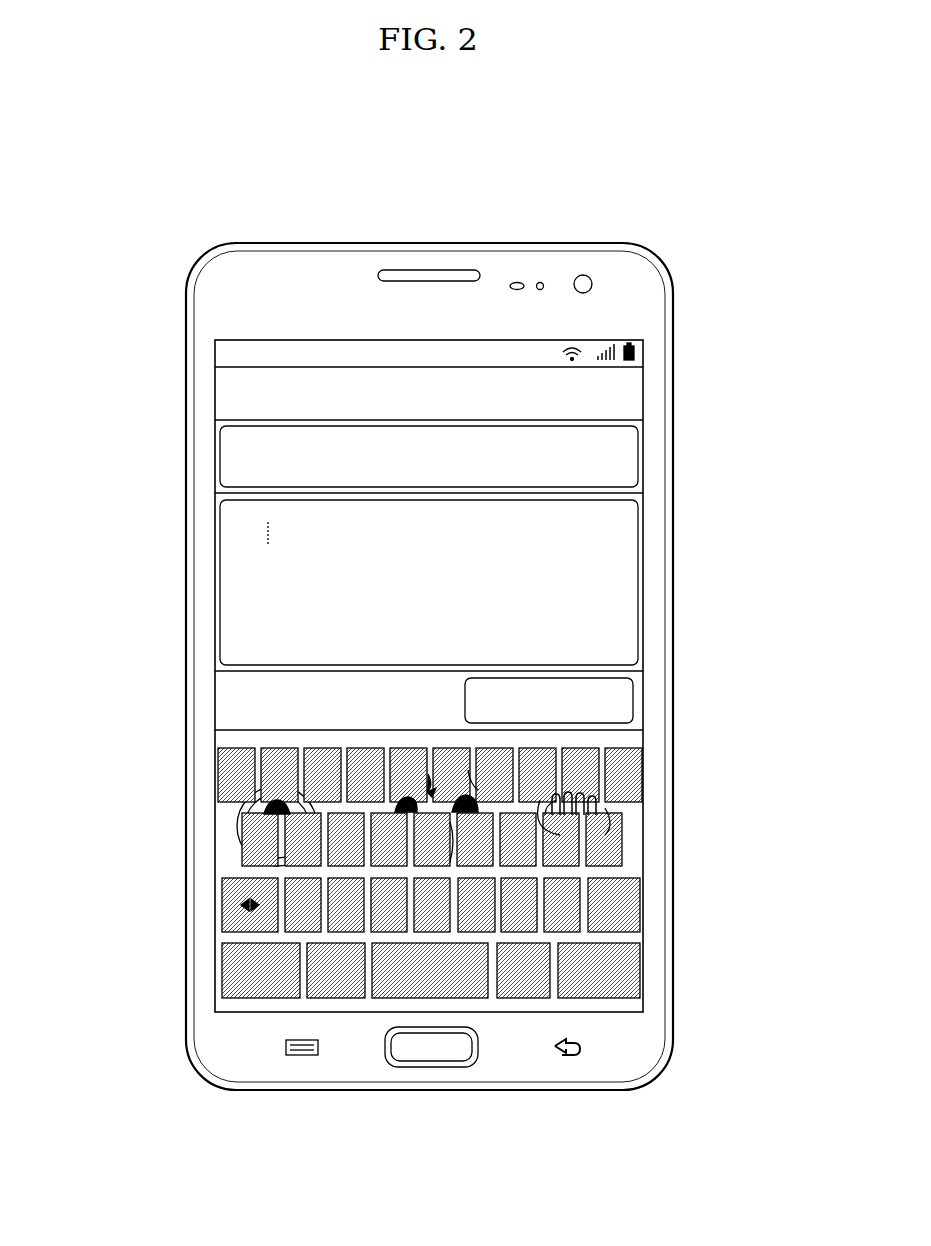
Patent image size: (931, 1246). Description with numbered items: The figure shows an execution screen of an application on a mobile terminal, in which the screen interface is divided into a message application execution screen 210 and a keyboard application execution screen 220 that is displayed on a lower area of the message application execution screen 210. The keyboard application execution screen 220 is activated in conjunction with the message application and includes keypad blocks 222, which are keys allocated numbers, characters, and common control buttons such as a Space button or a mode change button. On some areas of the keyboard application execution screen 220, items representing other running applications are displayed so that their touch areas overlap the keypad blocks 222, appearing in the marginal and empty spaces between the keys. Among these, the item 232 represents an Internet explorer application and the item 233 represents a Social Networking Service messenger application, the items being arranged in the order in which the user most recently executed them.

The message application execution screen 210 is at (422, 666).
The keyboard application execution screen 220 is at (391, 865).
The keypad blocks 222 is at (226, 760).
The item for representing an Internet explorer application 232 is at (430, 803).
The item for representing a Social Networking Service (SNS) messenger application 233 is at (573, 807).